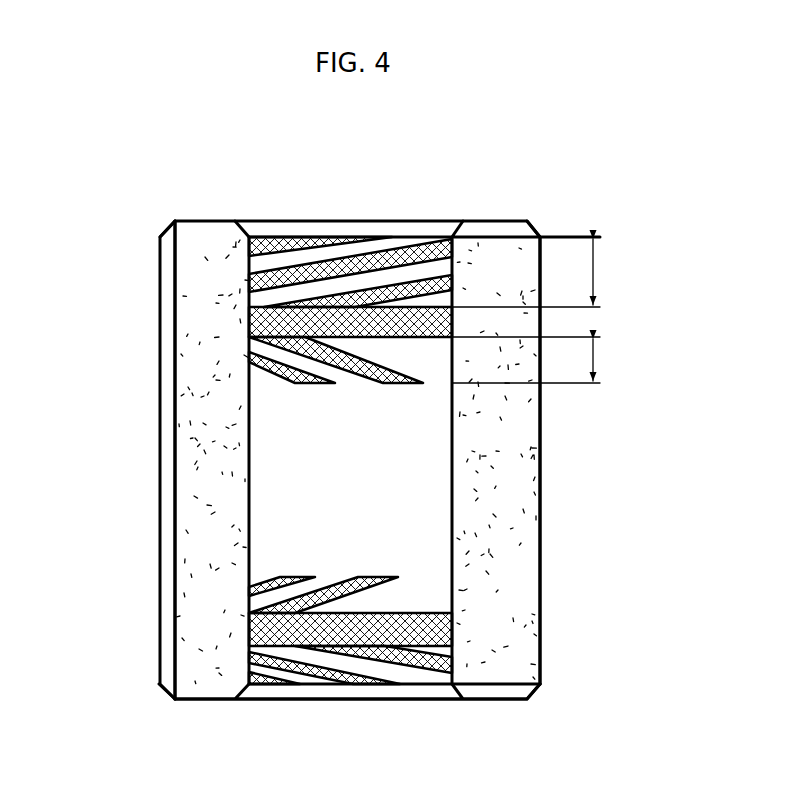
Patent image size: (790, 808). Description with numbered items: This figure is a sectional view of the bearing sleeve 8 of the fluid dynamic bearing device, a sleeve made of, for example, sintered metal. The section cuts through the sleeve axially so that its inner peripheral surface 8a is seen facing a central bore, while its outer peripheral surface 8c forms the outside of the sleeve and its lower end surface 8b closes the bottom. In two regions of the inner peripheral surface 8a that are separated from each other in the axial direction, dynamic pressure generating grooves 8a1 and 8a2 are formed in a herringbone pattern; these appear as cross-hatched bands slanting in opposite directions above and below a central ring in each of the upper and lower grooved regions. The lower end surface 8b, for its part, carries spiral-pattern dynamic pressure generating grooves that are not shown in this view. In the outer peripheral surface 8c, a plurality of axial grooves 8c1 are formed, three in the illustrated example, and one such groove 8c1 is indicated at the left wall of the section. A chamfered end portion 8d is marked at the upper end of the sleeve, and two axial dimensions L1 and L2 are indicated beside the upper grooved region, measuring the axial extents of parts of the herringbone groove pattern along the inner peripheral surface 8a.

The bearing sleeve 8 is at (561, 201).
The inner peripheral surface 8a is at (450, 445).
The dynamic pressure generating grooves 8a1 is at (401, 246).
The dynamic pressure generating grooves 8a2 is at (278, 306).
The lower end surface 8b is at (217, 697).
The outer peripheral surface 8c is at (541, 558).
The axial grooves 8c1 is at (174, 504).
The chamfered top end portion 8d is at (492, 222).
The dimension L1 is at (595, 270).
The dimension L2 is at (595, 359).